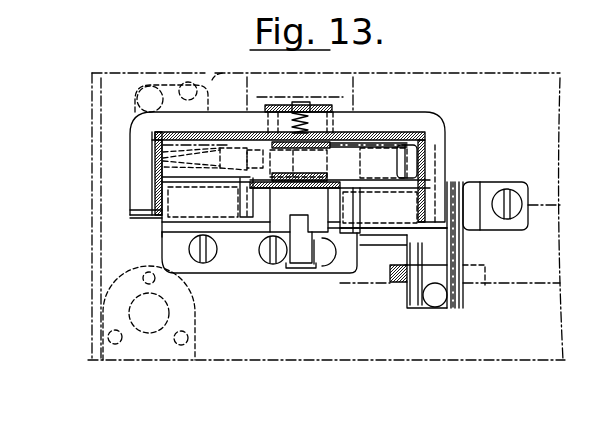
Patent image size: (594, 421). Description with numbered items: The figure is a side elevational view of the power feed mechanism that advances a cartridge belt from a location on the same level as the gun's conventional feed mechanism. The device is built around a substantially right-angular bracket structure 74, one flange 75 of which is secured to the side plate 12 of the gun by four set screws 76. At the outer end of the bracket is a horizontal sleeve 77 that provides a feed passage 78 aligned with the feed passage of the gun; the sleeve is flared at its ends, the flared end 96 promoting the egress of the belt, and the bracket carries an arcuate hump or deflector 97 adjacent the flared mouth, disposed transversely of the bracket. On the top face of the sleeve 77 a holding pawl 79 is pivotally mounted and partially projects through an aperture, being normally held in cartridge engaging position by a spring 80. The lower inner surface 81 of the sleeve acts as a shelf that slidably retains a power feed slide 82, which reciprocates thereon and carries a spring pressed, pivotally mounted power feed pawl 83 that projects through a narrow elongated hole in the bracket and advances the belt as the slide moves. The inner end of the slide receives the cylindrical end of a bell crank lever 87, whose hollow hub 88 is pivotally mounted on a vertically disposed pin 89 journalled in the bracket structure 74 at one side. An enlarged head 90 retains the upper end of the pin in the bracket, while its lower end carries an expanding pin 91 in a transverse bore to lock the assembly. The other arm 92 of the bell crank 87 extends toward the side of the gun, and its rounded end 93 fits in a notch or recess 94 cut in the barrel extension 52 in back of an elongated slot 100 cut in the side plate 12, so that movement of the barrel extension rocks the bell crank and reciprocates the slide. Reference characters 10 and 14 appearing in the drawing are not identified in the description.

The shaft housing 10 is at (92, 177).
The side plate 12 is at (196, 313).
The cover plate 14 is at (347, 100).
The barrel extension 52 is at (538, 284).
The bracket structure 74 is at (162, 219).
The flange 75 is at (303, 273).
The set screws 76 is at (268, 250).
The horizontal sleeve 77 is at (428, 148).
The feed passage 78 is at (195, 143).
The holding pawl 79 is at (326, 146).
The spring 80 is at (312, 117).
The lower inner surface 81 is at (390, 226).
The power feed slide 82 is at (347, 222).
The power feed pawl 83 is at (340, 202).
The bell crank lever 87 is at (393, 245).
The hollow hub 88 is at (463, 237).
The pin 89 is at (458, 257).
The enlarged head 90 is at (457, 185).
The expanding pin 91 is at (433, 299).
The arm 92 is at (403, 279).
The rounded end 93 is at (286, 266).
The recess 94 is at (390, 272).
The flared end 96 is at (421, 117).
The arcuate hump 97 is at (372, 171).
The elongated slot 100 is at (485, 275).